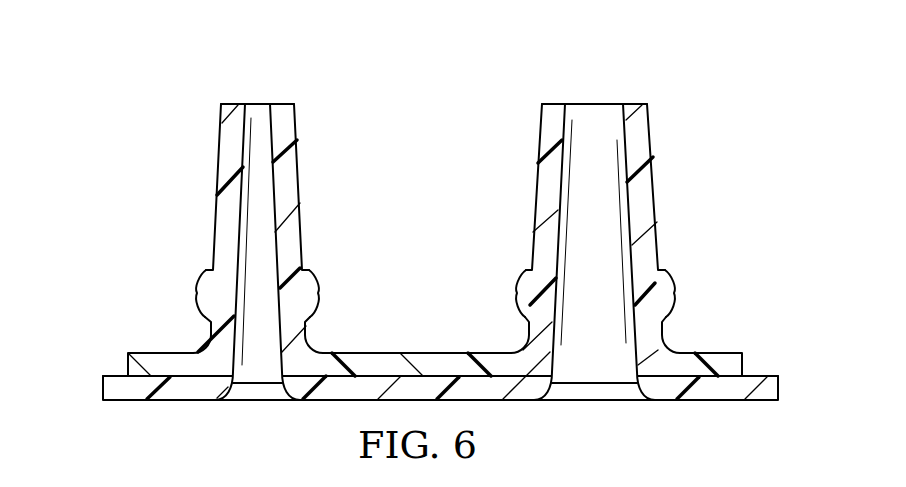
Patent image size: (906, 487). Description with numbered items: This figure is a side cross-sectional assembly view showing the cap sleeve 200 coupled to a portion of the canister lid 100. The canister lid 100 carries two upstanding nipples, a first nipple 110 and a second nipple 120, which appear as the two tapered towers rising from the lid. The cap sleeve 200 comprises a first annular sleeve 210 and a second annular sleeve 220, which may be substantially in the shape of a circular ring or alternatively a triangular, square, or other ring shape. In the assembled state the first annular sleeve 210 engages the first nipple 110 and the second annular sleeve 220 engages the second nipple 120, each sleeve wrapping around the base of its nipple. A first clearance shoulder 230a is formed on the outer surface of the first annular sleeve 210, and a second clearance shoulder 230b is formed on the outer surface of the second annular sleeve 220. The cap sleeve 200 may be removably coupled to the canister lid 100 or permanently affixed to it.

The canister lid 100 is at (209, 216).
The first nipple 110 is at (257, 104).
The second nipple 120 is at (593, 104).
The cap sleeve 200 is at (118, 360).
The first annular sleeve 210 is at (203, 331).
The second annular sleeve 220 is at (670, 330).
The first clearance shoulder 230a is at (197, 296).
The second clearance shoulder 230b is at (518, 295).